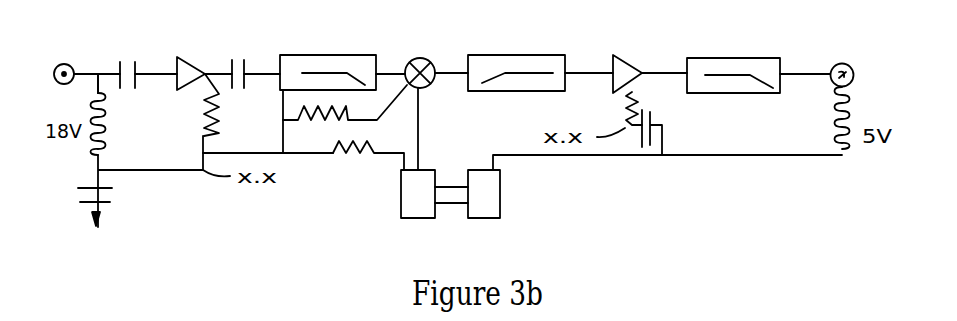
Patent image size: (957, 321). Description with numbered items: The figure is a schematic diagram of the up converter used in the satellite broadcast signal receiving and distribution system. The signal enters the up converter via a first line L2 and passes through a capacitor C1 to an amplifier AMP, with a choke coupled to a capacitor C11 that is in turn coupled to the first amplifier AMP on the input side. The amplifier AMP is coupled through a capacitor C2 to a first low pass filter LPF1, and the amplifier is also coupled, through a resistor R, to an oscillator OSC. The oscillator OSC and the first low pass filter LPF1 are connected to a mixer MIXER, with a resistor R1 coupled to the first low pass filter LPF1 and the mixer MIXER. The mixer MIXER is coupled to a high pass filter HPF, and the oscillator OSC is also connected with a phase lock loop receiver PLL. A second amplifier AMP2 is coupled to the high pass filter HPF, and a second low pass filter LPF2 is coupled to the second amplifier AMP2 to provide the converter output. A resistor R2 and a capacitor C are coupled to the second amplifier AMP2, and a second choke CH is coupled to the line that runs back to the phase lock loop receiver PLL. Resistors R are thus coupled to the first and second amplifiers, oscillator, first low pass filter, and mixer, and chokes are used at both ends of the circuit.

The first line L2 is at (85, 63).
The capacitor C1 is at (138, 64).
The capacitor C11 is at (122, 108).
The amplifier AMP is at (205, 61).
The capacitor C2 is at (254, 62).
The resistor R is at (297, 113).
The first low pass filter LPF1 is at (328, 59).
The resistor R1 is at (345, 102).
The mixer MIXER is at (423, 58).
The high pass filter HPF is at (516, 61).
The second amplifier AMP2 is at (647, 64).
The resistor R2 is at (617, 108).
The capacitor C is at (655, 130).
The second low pass filter LPF2 is at (733, 63).
The choke CH is at (823, 118).
The oscillator OSC is at (395, 153).
The phase lock loop receiver PLL is at (497, 194).